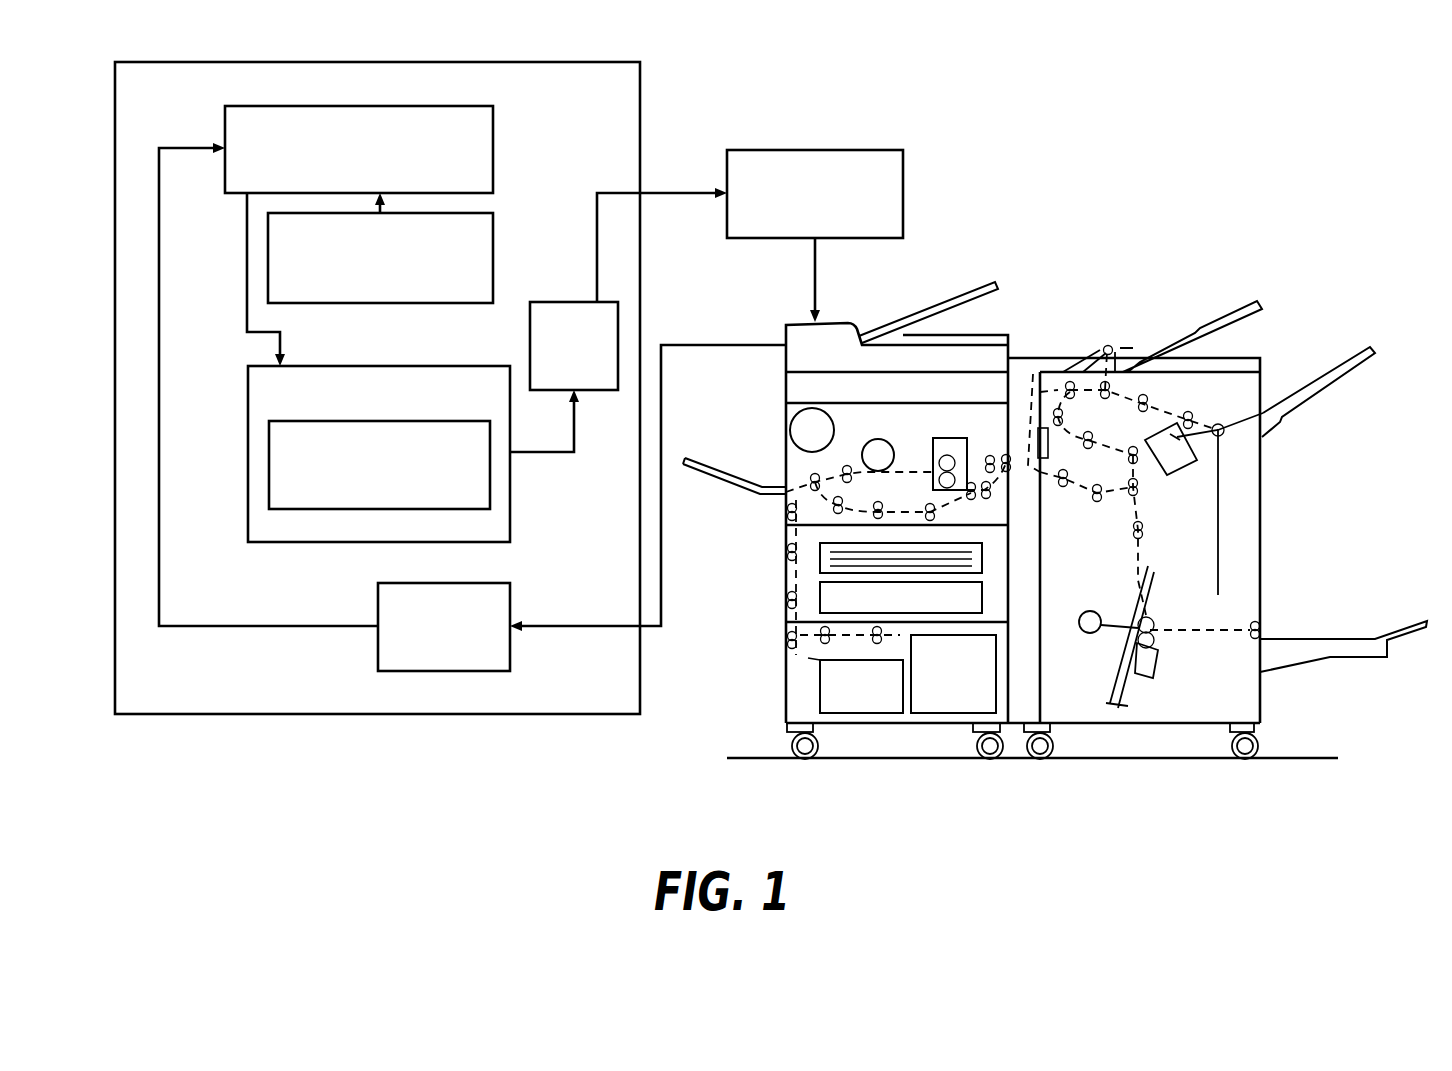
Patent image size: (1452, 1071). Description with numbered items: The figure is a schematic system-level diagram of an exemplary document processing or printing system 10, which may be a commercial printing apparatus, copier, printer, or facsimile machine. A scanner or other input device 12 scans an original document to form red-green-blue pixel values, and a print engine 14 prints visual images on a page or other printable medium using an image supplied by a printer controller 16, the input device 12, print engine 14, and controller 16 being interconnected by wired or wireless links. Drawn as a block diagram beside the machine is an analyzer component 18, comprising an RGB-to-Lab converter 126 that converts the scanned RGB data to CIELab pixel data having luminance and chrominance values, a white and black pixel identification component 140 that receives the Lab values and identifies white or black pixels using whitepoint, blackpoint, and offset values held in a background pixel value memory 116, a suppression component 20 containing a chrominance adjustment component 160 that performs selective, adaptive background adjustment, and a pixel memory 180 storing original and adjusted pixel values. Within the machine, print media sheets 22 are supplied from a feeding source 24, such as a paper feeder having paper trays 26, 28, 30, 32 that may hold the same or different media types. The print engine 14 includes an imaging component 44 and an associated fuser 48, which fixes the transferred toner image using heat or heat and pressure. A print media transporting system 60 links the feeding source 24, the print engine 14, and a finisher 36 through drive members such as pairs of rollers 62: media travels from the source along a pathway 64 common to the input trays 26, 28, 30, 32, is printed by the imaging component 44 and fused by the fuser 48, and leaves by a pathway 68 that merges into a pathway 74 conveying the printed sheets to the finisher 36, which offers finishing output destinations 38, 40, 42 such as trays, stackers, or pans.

The printing system 10 is at (1183, 242).
The input device 12 is at (1014, 282).
The print engine 14 is at (776, 446).
The printer controller 16 is at (903, 200).
The analyzer component 18 is at (378, 62).
The suppression component 20 is at (248, 388).
The print media sheets 22 is at (982, 568).
The feeding source 24 is at (758, 543).
The paper tray 26 is at (820, 562).
The paper tray 28 is at (820, 607).
The paper tray 30 is at (858, 713).
The paper tray 32 is at (947, 713).
The finisher 36 is at (1304, 485).
The finishing output destination 38 is at (1248, 316).
The finishing output destination 40 is at (1325, 383).
The finishing output destination 42 is at (1320, 637).
The imaging component 44 is at (880, 440).
The fuser 48 is at (968, 490).
The print media transporting system 60 is at (1023, 507).
The pairs of rollers 62 is at (812, 480).
The pathway 64 is at (833, 442).
The pathway 68 is at (988, 435).
The pathway 74 is at (1050, 353).
The background pixel value memory 116 is at (493, 258).
The RGB-to-Lab converter 126 is at (447, 671).
The white and black pixel identification component 140 is at (493, 150).
The chrominance adjustment component 160 is at (269, 462).
The pixel memory 180 is at (530, 345).